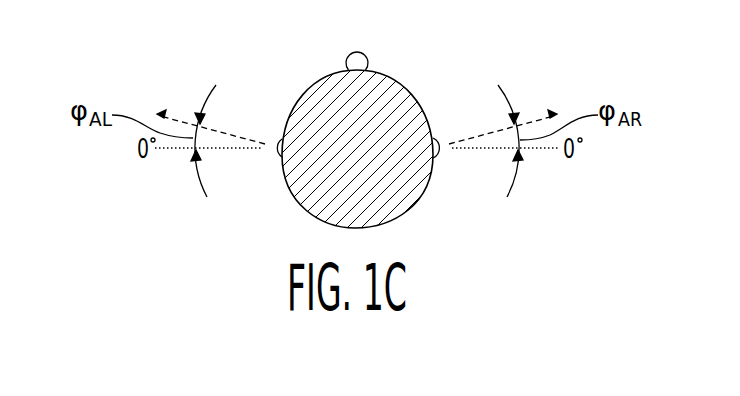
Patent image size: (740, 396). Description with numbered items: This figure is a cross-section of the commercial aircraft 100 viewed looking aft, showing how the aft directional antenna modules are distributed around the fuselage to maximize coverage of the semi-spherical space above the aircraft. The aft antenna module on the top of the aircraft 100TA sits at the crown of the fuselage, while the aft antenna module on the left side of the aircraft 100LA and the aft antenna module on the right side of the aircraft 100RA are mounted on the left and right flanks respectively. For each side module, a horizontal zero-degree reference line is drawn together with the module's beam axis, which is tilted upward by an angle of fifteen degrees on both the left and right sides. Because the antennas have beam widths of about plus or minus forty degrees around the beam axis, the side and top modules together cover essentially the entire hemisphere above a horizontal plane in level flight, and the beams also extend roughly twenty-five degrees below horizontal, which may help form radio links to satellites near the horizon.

The commercial aircraft 100 is at (392, 87).
The aft antenna module on the top of the aircraft 100TA is at (357, 52).
The aft antenna module on the left side of the aircraft 100LA is at (273, 160).
The aft antenna module on the right side of the aircraft 100RA is at (440, 160).